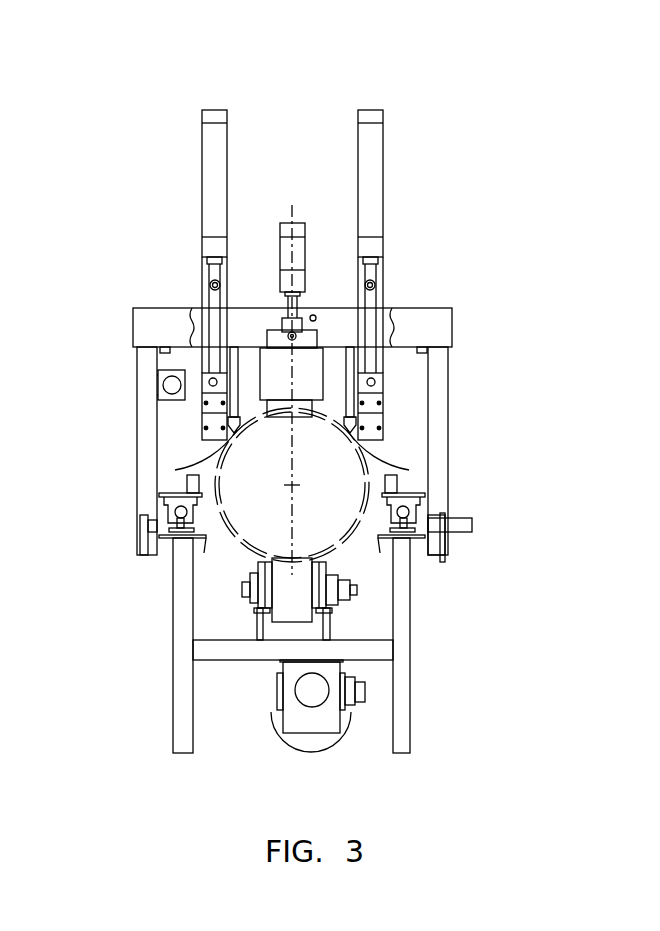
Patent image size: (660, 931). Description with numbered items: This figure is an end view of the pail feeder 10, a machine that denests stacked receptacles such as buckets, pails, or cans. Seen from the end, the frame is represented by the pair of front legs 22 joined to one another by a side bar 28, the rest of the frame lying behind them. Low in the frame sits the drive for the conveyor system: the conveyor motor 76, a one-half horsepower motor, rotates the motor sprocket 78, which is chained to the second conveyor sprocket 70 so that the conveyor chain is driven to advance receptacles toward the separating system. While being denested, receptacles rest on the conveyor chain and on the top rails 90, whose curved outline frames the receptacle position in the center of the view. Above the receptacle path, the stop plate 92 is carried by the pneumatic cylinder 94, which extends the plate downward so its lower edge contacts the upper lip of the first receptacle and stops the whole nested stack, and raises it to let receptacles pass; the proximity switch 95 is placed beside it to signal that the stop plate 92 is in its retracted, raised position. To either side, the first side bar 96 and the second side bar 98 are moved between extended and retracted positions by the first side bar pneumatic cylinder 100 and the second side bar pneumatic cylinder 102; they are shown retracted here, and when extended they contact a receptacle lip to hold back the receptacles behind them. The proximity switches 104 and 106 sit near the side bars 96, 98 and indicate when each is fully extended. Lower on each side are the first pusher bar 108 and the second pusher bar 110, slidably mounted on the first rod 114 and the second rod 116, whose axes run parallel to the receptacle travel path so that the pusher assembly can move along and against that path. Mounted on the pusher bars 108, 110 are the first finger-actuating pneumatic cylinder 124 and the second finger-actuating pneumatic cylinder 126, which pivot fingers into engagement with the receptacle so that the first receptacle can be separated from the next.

The feeder 10 is at (433, 84).
The front legs 22 is at (182, 618).
The side bar 28 is at (410, 710).
The second conveyor sprocket 70 is at (293, 595).
The conveyor motor 76 is at (343, 728).
The motor sprocket 78 is at (367, 653).
The top rails 90 is at (175, 470).
The stop plate 92 is at (325, 410).
The pneumatic cylinder 94 is at (302, 247).
The proximity switch 95 is at (316, 318).
The first side bar 96 is at (392, 264).
The second side bar 98 is at (196, 283).
The first side bar pneumatic cylinder 100 is at (377, 167).
The second side bar pneumatic cylinder 102 is at (212, 177).
The proximity switch 104 is at (376, 384).
The proximity switch 106 is at (209, 382).
The first pusher bar 108 is at (448, 520).
The second pusher bar 110 is at (160, 497).
The first rod 114 is at (407, 530).
The second rod 116 is at (172, 548).
The first finger-actuating pneumatic cylinder 124 is at (397, 483).
The second finger-actuating pneumatic cylinder 126 is at (187, 485).